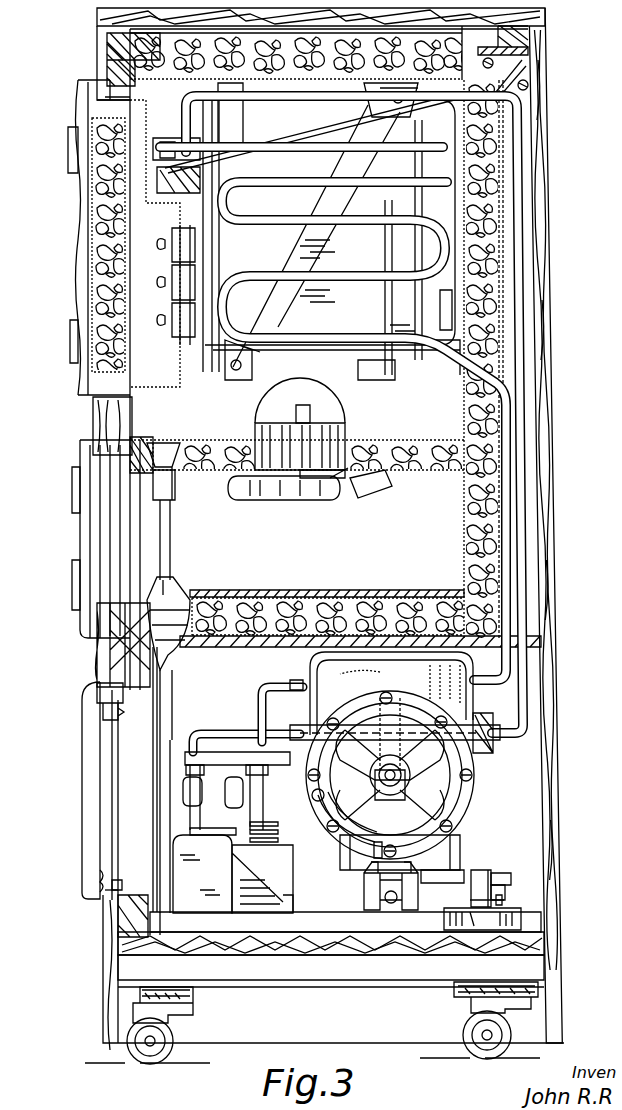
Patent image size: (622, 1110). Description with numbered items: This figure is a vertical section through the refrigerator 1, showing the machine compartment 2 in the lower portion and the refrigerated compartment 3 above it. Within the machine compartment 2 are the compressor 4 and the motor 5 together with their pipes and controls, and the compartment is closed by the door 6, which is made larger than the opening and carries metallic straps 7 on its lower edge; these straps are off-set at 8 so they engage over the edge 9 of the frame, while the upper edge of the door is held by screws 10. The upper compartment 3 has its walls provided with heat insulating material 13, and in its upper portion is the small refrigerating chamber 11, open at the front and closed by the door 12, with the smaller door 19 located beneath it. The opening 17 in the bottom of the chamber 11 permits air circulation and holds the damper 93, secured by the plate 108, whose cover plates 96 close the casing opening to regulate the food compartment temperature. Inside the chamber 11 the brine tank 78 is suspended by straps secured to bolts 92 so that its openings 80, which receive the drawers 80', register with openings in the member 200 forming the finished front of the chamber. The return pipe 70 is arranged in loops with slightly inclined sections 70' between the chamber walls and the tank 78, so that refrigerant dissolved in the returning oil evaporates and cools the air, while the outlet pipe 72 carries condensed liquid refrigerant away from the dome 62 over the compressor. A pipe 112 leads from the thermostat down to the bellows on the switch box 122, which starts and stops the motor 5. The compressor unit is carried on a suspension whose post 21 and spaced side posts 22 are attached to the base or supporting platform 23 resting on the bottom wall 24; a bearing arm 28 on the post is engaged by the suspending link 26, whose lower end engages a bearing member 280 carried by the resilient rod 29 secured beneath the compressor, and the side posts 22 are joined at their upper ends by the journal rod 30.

The refrigerator 1 is at (97, 86).
The machine compartment 2 is at (185, 779).
The refrigerated compartment 3 is at (244, 530).
The compressor 4 is at (474, 817).
The motor 5 is at (395, 775).
The door 6 is at (88, 793).
The metallic straps 7 is at (107, 867).
The off-set 8 is at (118, 880).
The edge of frame 9 is at (117, 890).
The screws 10 is at (78, 697).
The refrigerating chamber 11 is at (331, 255).
The door 12 is at (78, 274).
The heat insulating material 13 is at (300, 78).
The opening 17 is at (253, 443).
The smaller door 19 is at (85, 543).
The rear supporting post 21 is at (297, 880).
The side post 22 is at (483, 873).
The base or supporting platform 23 is at (260, 920).
The bottom wall 24 is at (361, 940).
The suspending link 26 is at (498, 888).
The bearing arm 28 is at (511, 865).
The resilient rod 29 is at (451, 907).
The journal rod 30 is at (421, 875).
The dome 62 is at (330, 670).
The return pipe 70 is at (373, 414).
The sections of return pipe 70' is at (312, 260).
The outlet pipe 72 is at (458, 315).
The brine tank 78 is at (361, 358).
The openings 80 is at (166, 252).
The drawers 80' is at (166, 297).
The bolts 92 is at (313, 231).
The damper 93 is at (332, 440).
The cover plates 96 is at (270, 414).
The plate 108 is at (238, 476).
The pipe 112 is at (525, 178).
The switch box 122 is at (202, 874).
The finished front member 200 is at (165, 267).
The bearing member 280 is at (504, 900).